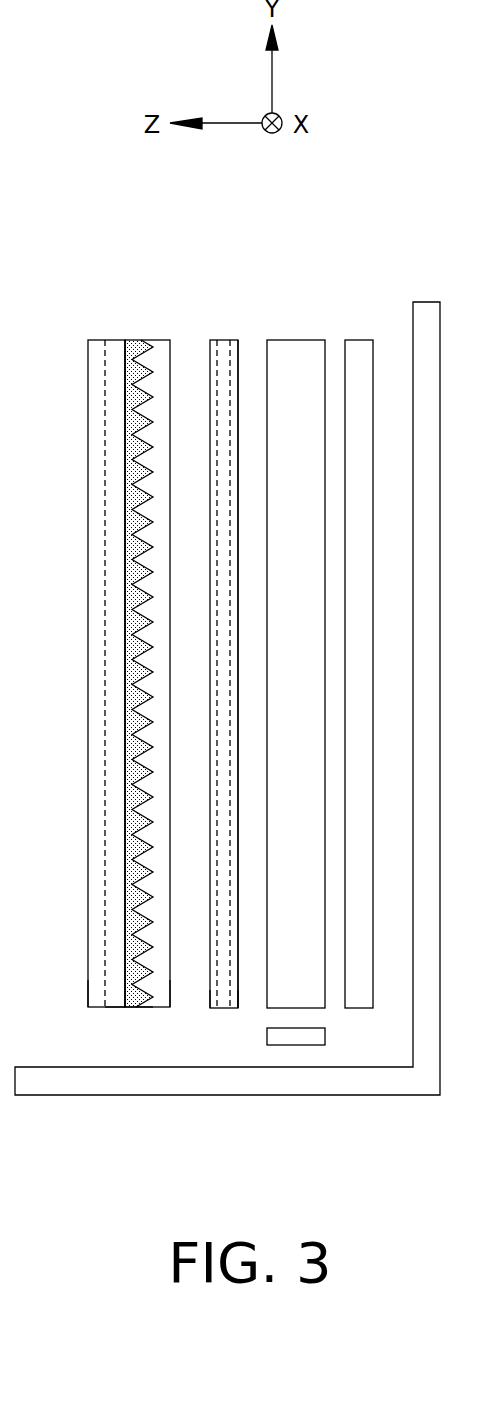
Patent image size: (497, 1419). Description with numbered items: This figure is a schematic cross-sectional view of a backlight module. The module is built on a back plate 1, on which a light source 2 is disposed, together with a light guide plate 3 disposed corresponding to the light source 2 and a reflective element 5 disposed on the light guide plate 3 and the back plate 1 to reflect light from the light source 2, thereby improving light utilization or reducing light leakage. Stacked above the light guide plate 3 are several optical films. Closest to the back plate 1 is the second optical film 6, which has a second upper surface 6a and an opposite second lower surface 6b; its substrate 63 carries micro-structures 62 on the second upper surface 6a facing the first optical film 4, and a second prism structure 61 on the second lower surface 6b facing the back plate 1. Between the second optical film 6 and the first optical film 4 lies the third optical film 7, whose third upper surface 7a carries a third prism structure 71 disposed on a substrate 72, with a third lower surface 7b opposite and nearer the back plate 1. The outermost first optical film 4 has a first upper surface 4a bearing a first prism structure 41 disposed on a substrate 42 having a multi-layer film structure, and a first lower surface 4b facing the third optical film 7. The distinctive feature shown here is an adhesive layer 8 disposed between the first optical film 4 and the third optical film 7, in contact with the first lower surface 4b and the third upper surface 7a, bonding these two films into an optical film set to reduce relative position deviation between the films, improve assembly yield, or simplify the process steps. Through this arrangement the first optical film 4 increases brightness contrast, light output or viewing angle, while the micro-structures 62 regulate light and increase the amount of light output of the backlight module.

The back plate 1 is at (380, 1078).
The light source 2 is at (295, 1038).
The light guide plate 3 is at (293, 353).
The first optical film 4 is at (81, 690).
The first prism structure 41 is at (100, 340).
The substrate 42 is at (122, 641).
The first upper surface 4a is at (88, 985).
The first lower surface 4b is at (126, 1012).
The reflective element 5 is at (358, 353).
The second optical film 6 is at (227, 690).
The second prism structure 61 is at (257, 642).
The micro-structures 62 is at (212, 340).
The substrate 63 is at (227, 339).
The second upper surface 6a is at (210, 995).
The second lower surface 6b is at (238, 998).
The third optical film 7 is at (150, 662).
The third prism structure 71 is at (150, 345).
The substrate 72 is at (160, 343).
The third upper surface 7a is at (143, 1007).
The third lower surface 7b is at (170, 1003).
The adhesive layer 8 is at (125, 397).